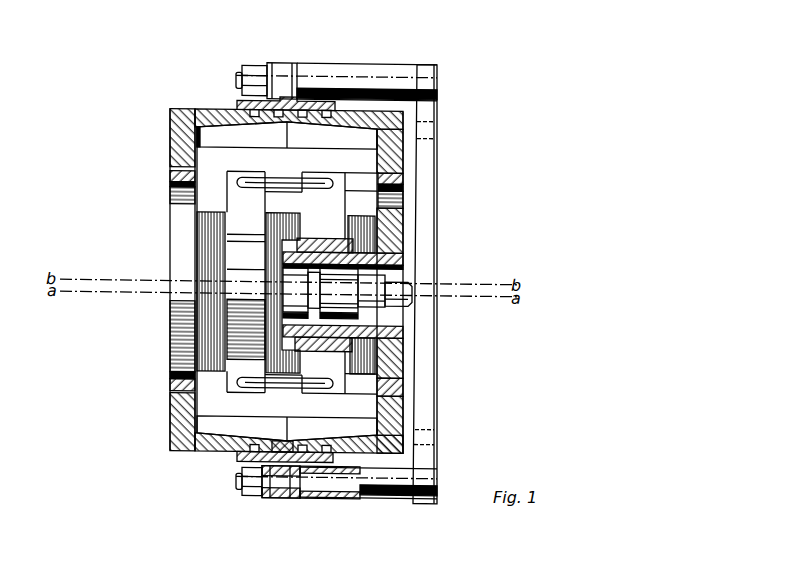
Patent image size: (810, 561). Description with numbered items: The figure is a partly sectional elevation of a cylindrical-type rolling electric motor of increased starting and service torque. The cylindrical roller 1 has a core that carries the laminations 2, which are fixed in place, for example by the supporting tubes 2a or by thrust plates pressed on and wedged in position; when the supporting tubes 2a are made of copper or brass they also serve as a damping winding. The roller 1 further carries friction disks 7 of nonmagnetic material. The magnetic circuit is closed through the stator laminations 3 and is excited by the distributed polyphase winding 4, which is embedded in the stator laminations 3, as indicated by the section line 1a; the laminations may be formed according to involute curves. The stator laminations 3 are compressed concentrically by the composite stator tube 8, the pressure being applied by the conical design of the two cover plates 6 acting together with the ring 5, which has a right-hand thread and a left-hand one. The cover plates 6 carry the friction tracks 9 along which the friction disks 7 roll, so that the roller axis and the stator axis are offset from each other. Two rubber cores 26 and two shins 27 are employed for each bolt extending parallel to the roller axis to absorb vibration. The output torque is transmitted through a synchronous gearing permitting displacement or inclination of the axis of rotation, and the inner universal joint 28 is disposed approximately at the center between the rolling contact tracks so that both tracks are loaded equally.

The roller 1 is at (292, 247).
The laminations 2 is at (282, 223).
The supporting tubes 2a is at (324, 282).
The stator laminations 3 is at (215, 160).
The distributed polyphase winding 4 is at (240, 183).
The ring 5 is at (240, 101).
The cover plates 6 is at (237, 108).
The friction disks 7 is at (182, 338).
The composite stator tube 8 is at (225, 137).
The friction tracks 9 is at (170, 176).
The rubber cores 26 is at (303, 443).
The shins 27 is at (305, 500).
The inner universal joint 28 is at (313, 290).
The section line 1a is at (325, 228).